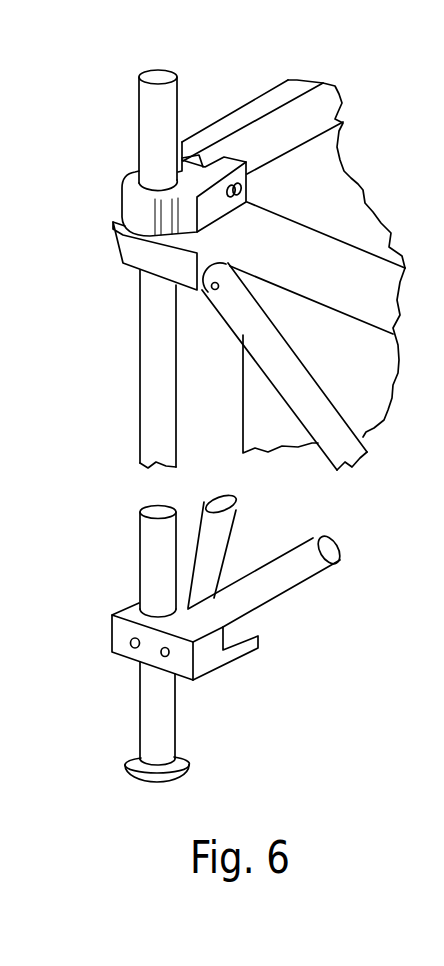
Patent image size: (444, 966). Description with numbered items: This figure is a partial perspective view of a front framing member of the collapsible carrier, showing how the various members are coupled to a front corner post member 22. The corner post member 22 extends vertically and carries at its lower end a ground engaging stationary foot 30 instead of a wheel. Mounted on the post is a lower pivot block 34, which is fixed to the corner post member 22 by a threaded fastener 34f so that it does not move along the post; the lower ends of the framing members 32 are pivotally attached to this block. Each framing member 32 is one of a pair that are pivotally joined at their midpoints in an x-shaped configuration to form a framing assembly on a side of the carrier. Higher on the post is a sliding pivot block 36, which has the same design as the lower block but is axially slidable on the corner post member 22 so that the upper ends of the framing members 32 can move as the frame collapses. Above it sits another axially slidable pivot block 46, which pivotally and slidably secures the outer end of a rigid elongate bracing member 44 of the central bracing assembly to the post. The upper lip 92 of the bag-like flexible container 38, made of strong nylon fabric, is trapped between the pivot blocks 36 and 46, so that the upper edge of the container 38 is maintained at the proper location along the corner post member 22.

The front corner post member 22 is at (152, 704).
The ground engaging stationary foot 30 is at (128, 762).
The framing member 32 is at (334, 450).
The lower pivot block 34 is at (122, 637).
The threaded fastener 34f is at (134, 648).
The sliding pivot block 36 is at (134, 256).
The flexible container 38 is at (262, 425).
The bracing member 44 is at (326, 97).
The axially slidable pivot block 46 is at (128, 183).
The upper lip 92 is at (250, 110).